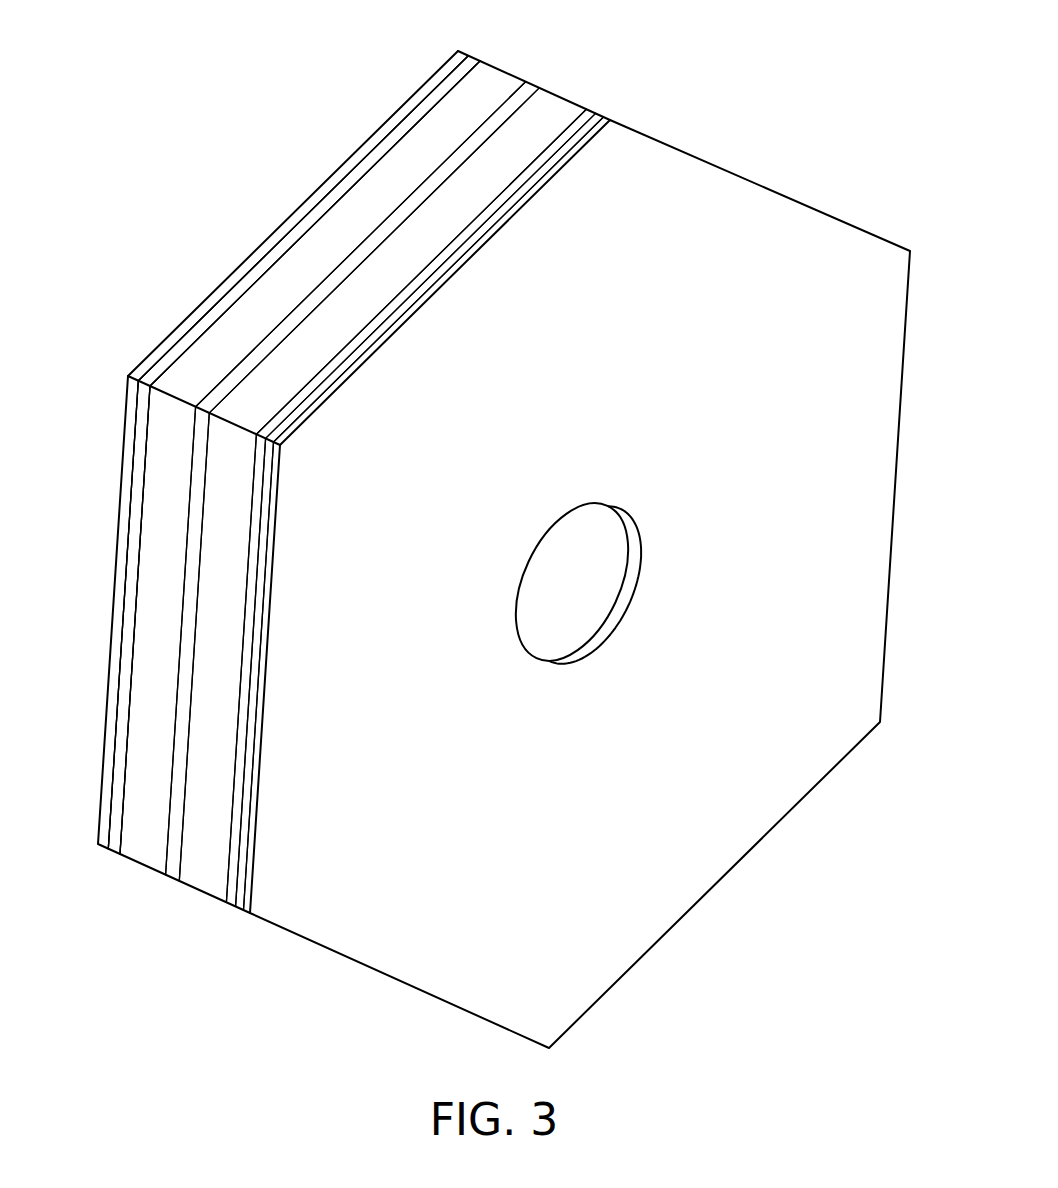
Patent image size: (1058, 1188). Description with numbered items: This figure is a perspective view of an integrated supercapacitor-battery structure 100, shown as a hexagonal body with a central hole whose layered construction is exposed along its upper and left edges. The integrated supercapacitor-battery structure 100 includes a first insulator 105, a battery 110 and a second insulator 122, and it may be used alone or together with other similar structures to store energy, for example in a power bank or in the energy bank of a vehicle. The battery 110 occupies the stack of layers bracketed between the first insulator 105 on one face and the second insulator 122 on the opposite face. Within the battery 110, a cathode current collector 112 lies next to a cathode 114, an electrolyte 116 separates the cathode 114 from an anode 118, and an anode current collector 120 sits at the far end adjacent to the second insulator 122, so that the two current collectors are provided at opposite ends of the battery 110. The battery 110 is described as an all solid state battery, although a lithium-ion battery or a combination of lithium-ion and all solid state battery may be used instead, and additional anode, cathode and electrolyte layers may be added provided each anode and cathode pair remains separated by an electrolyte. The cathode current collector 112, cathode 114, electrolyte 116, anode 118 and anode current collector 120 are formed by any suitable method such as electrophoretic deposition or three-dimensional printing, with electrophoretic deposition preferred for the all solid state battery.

The integrated supercapacitor-battery structure 100 is at (777, 132).
The first insulator 105 is at (550, 170).
The battery 110 is at (359, 472).
The cathode current collector 112 is at (488, 212).
The cathode 114 is at (225, 547).
The electrolyte 116 is at (193, 562).
The anode 118 is at (158, 657).
The anode current collector 120 is at (130, 615).
The second insulator 122 is at (163, 350).